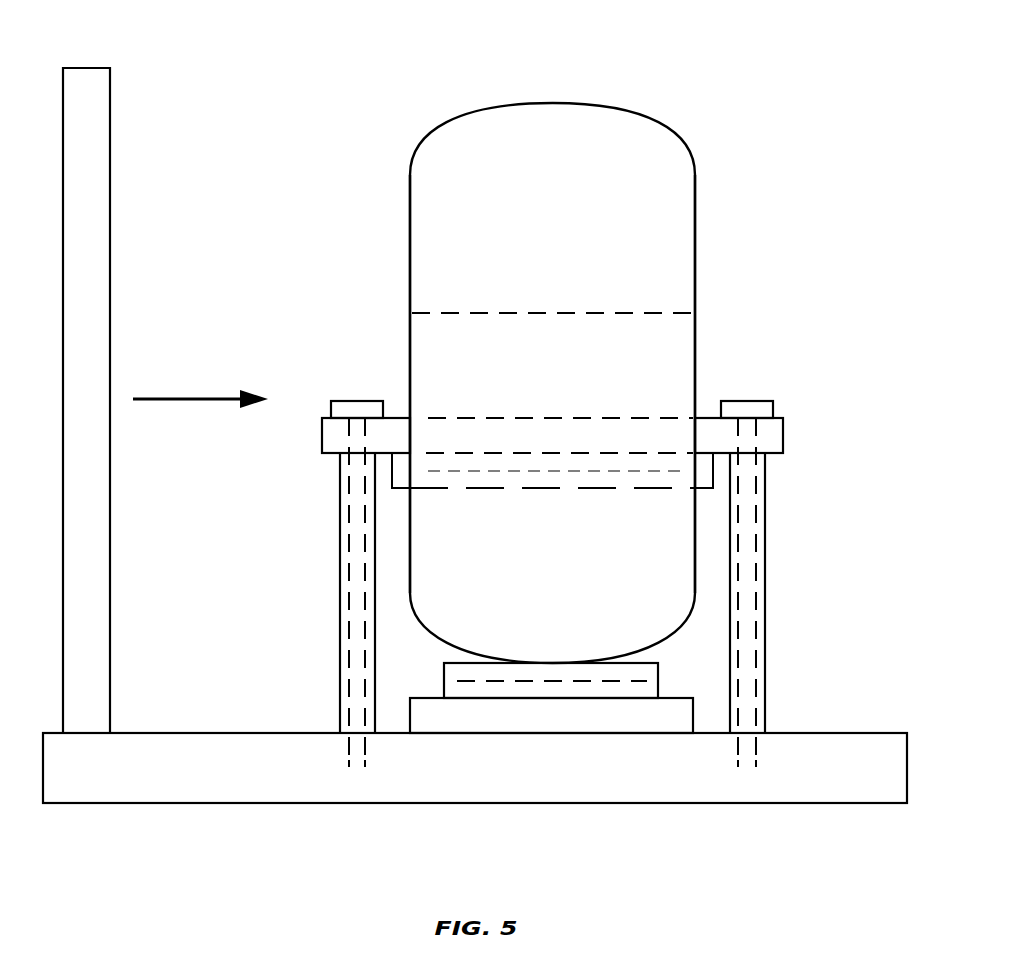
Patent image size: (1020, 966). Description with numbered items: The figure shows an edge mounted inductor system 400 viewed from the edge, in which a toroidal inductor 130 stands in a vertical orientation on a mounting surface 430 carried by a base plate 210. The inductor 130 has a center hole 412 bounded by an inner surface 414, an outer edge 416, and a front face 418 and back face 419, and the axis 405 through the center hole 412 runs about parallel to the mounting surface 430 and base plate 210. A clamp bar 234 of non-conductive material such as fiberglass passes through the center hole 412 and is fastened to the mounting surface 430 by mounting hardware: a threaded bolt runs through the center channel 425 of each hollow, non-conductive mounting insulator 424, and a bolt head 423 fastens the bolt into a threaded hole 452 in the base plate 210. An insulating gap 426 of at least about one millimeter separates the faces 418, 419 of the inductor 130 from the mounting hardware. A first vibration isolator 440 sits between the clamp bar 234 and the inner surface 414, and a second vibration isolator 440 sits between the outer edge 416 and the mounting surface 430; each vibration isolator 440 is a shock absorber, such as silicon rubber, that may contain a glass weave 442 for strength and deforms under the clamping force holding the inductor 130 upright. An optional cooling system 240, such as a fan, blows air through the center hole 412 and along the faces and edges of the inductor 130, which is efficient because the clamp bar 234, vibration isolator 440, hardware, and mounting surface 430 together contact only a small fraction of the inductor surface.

The base plate 210 is at (830, 733).
The cooling system 240 is at (95, 68).
The axis 405 is at (160, 401).
The edge mounted inductor system 400 is at (790, 95).
The outer edge 416 is at (560, 103).
The front face 418 is at (410, 242).
The back face 419 is at (695, 222).
The inductor 130 is at (532, 251).
The center hole 412 is at (532, 383).
The inner surface 414 is at (530, 313).
The clamp bar 234 is at (443, 418).
The glass weave 442 is at (603, 475).
The vibration isolator 440 is at (430, 489).
The mounting surface 430 is at (620, 737).
The bolt head 423 is at (358, 400).
The mounting insulator 424 is at (340, 612).
The center channel 425 is at (349, 680).
The threaded hole 452 is at (350, 768).
The insulating gap 426 is at (386, 551).